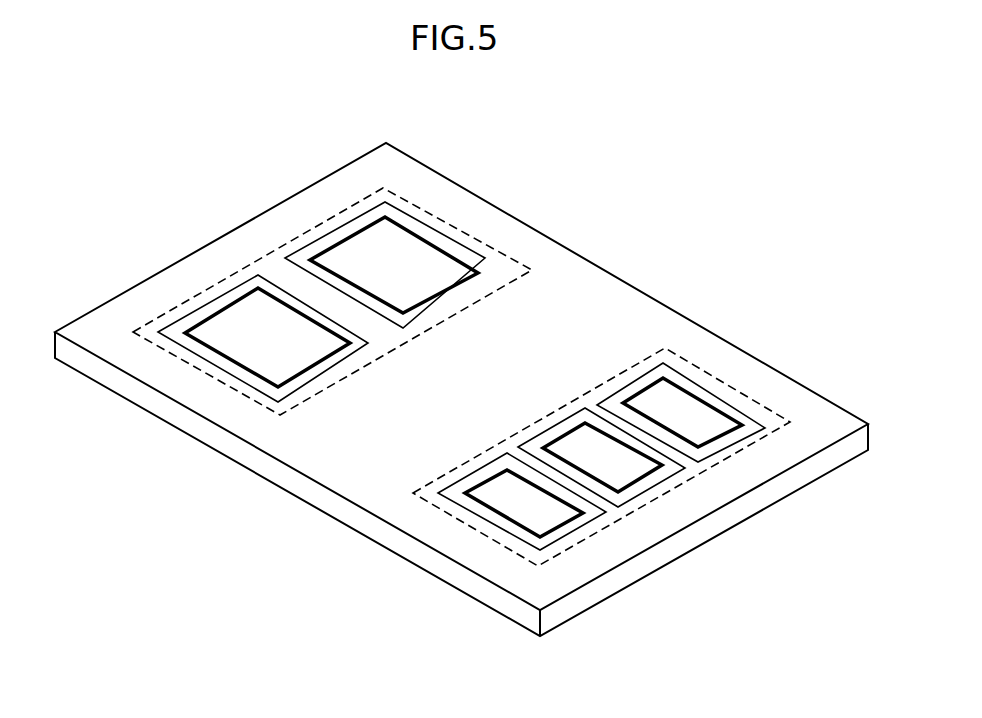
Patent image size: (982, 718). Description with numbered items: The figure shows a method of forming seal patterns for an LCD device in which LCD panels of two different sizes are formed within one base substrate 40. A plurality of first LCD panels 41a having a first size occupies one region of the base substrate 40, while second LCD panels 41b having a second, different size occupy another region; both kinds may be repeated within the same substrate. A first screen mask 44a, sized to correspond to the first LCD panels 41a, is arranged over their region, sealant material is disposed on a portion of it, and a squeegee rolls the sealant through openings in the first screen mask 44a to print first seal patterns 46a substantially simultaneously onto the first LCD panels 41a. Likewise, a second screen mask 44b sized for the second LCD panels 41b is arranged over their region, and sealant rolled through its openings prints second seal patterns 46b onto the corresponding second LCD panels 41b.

The base substrate 40 is at (682, 510).
The first LCD panels 41a is at (473, 250).
The second LCD panels 41b is at (737, 405).
The first screen mask 44a is at (361, 200).
The second screen mask 44b is at (685, 358).
The first seal patterns 46a is at (322, 253).
The second seal patterns 46b is at (728, 436).